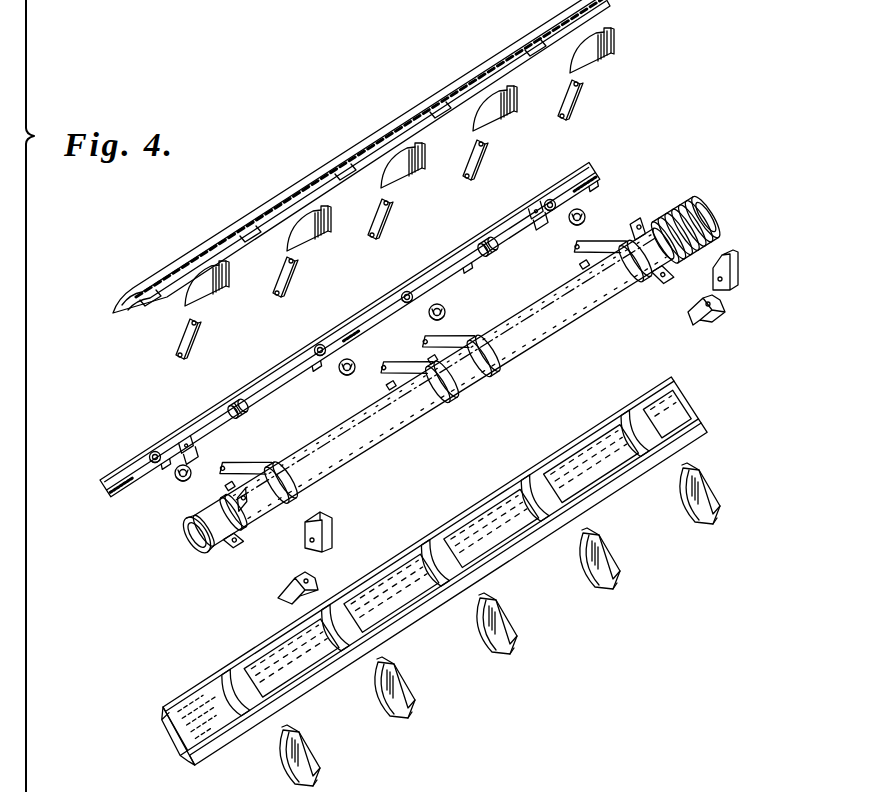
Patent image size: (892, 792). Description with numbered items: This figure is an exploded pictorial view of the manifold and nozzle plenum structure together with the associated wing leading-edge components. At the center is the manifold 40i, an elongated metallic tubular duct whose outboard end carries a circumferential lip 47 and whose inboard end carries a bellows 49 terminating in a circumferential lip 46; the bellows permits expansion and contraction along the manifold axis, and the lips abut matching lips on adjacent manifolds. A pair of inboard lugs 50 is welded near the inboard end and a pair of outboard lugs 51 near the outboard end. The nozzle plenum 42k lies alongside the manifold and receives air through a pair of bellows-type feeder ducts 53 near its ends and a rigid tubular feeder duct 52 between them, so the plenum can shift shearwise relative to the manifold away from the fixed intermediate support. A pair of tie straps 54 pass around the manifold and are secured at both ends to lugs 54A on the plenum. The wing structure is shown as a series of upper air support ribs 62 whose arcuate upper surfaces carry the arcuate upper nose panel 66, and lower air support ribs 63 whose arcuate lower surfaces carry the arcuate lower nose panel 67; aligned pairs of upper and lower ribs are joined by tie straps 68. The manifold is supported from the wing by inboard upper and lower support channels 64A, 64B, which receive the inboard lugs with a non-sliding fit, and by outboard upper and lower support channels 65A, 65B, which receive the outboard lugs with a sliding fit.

The arcuate upper nose panel 66 is at (392, 127).
The upper air support ribs 62 is at (229, 266).
The tie straps 68 is at (196, 326).
The nozzle plenum 42k is at (462, 245).
The lugs 54A is at (532, 215).
The feeder ducts 53 is at (584, 210).
The feeder duct 52 is at (490, 255).
The manifold 40i is at (555, 331).
The circumferential lip 47 is at (205, 552).
The tie straps 54 is at (295, 497).
The bellows 49 is at (680, 208).
The circumferential lip 46 is at (706, 222).
The inboard lugs 50 is at (640, 232).
The outboard lugs 51 is at (238, 505).
The inboard upper support channel 64A is at (740, 264).
The inboard lower support channel 64B is at (708, 322).
The outboard upper support channel 65A is at (335, 528).
The outboard lower support channel 65B is at (280, 595).
The arcuate lower nose panel 67 is at (215, 760).
The lower air support ribs 63 is at (395, 722).